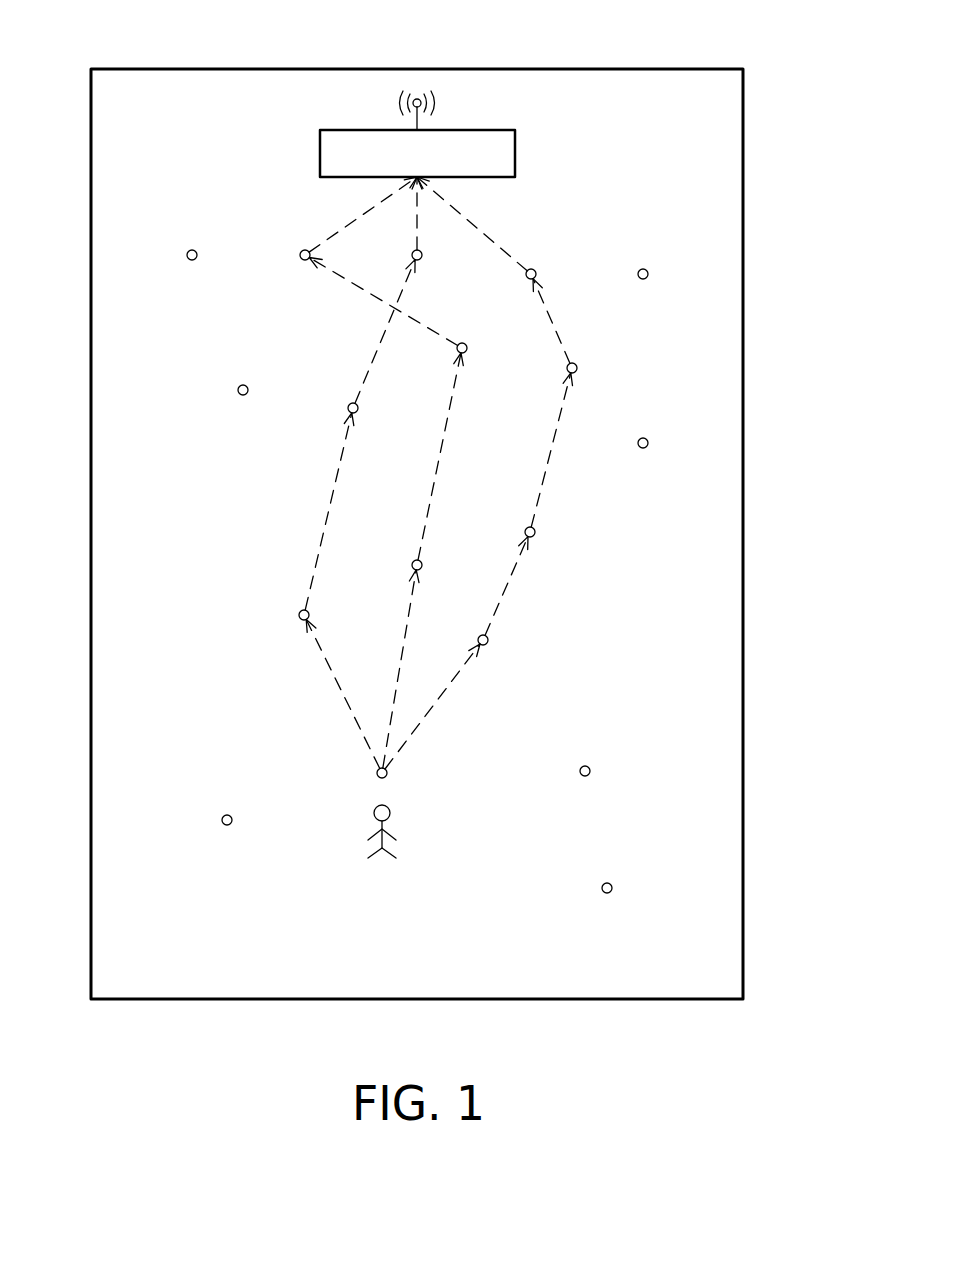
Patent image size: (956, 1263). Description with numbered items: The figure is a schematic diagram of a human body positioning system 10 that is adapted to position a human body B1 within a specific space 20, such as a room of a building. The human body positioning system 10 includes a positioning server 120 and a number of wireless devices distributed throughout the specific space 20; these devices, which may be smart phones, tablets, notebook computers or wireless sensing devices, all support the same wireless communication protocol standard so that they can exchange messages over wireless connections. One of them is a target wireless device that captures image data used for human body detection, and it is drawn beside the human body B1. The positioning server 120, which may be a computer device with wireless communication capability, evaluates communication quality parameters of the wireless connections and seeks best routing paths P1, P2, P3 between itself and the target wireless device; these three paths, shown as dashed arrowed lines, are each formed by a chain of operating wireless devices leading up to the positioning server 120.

The human body positioning system 10 is at (767, 1072).
The specific space 20 is at (134, 100).
The positioning server 120 is at (515, 153).
The human body B1 is at (373, 812).
The best routing path P1 is at (333, 498).
The best routing path P2 is at (552, 459).
The best routing path P3 is at (367, 292).